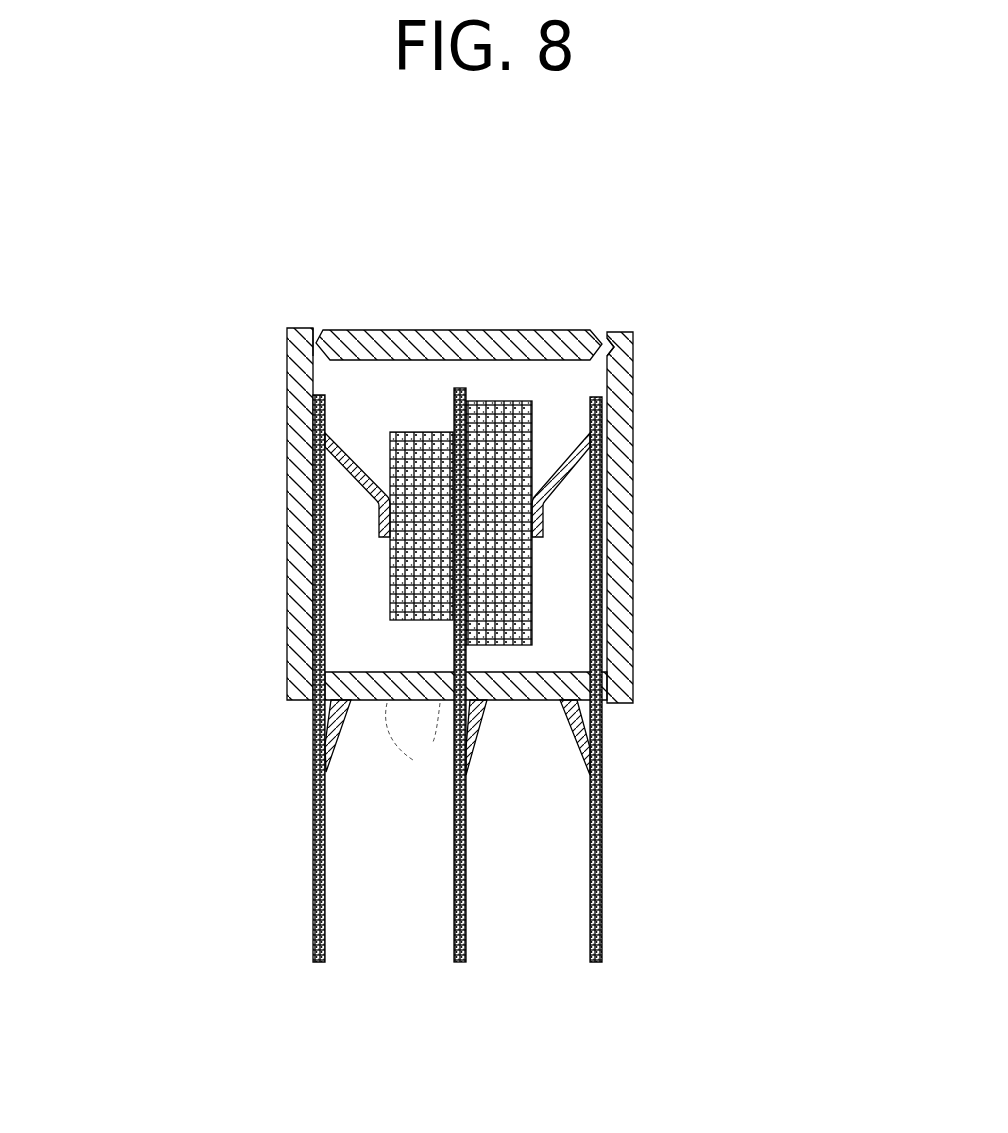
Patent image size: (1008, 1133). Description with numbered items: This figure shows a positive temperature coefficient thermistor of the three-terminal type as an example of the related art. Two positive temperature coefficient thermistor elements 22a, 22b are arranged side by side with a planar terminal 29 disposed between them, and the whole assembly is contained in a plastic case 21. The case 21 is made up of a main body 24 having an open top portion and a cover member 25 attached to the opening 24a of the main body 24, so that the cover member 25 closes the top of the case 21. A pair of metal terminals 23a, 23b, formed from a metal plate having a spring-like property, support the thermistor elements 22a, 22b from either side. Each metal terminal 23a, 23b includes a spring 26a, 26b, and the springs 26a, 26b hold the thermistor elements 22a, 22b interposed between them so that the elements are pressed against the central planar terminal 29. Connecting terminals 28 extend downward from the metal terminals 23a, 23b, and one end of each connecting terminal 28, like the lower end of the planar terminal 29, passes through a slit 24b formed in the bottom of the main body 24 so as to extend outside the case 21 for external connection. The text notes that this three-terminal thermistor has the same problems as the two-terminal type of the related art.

The plastic case 21 is at (647, 405).
The positive temperature coefficient thermistor element 22a is at (423, 432).
The positive temperature coefficient thermistor element 22b is at (502, 400).
The metal terminal 23a is at (313, 757).
The metal terminal 23b is at (611, 775).
The main body 24 is at (632, 537).
The opening 24a is at (585, 322).
The slit 24b is at (453, 703).
The cover member 25 is at (423, 328).
The spring 26a is at (363, 487).
The spring 26b is at (560, 490).
The connecting terminal 28 is at (312, 842).
The planar terminal 29 is at (466, 822).